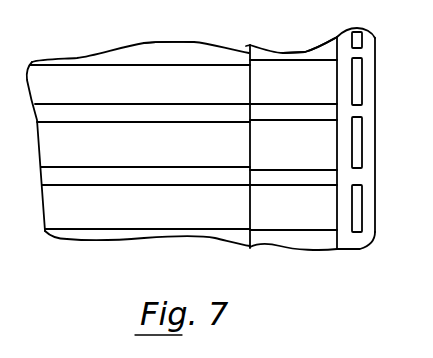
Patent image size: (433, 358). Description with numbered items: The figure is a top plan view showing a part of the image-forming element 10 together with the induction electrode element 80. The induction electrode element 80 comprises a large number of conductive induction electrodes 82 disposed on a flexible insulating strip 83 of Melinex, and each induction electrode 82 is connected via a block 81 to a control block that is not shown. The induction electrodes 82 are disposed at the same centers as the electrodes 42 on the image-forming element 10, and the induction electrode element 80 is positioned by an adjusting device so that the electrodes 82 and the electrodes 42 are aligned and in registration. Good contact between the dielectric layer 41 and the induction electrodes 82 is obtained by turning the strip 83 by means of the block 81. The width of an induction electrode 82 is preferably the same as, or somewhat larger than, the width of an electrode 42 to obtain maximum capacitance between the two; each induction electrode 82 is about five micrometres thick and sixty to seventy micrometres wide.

The image-forming element 10 is at (155, 267).
The dielectric layer 41 is at (179, 53).
The electrode 42 is at (102, 83).
The induction electrode element 80 is at (305, 283).
The block 81 is at (366, 57).
The induction electrode 82 is at (288, 83).
The flexible insulating strip 83 is at (279, 53).